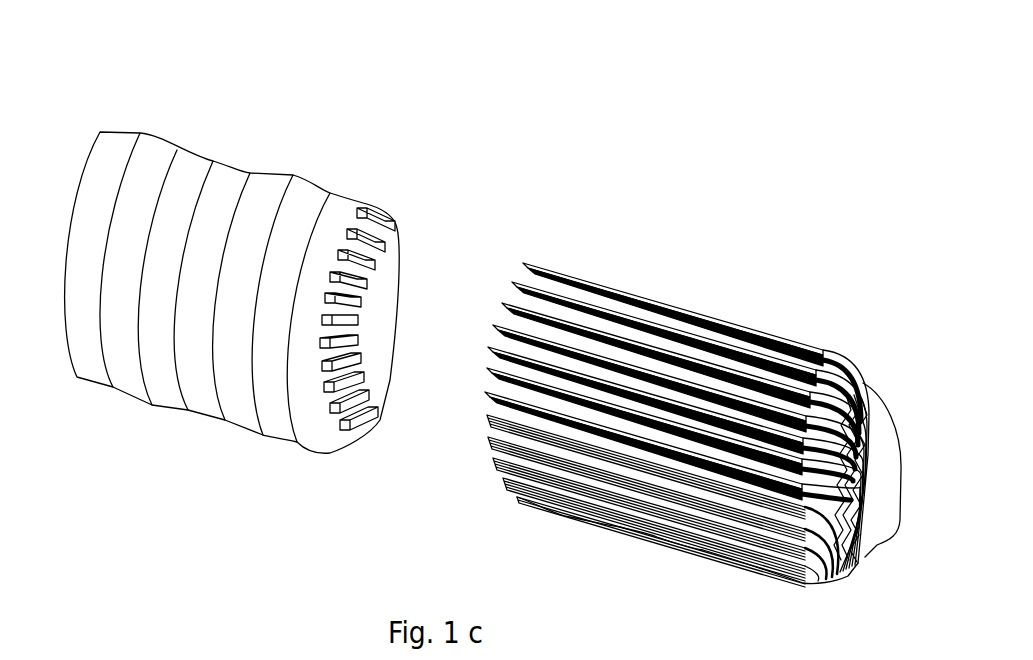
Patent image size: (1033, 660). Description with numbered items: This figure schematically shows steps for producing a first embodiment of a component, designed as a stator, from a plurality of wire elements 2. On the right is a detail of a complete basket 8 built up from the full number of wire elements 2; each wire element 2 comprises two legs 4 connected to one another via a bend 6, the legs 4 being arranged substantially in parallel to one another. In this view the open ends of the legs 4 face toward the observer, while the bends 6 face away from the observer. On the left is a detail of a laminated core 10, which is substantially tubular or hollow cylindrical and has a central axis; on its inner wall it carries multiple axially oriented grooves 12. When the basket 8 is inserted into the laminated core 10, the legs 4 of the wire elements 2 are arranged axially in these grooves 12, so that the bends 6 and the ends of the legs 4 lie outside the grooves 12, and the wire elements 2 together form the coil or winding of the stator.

The wire element 2 is at (852, 575).
The legs 4 is at (708, 552).
The bend 6 is at (868, 563).
The basket 8 is at (701, 399).
The laminated core 10 is at (246, 259).
The grooves 12 is at (373, 423).